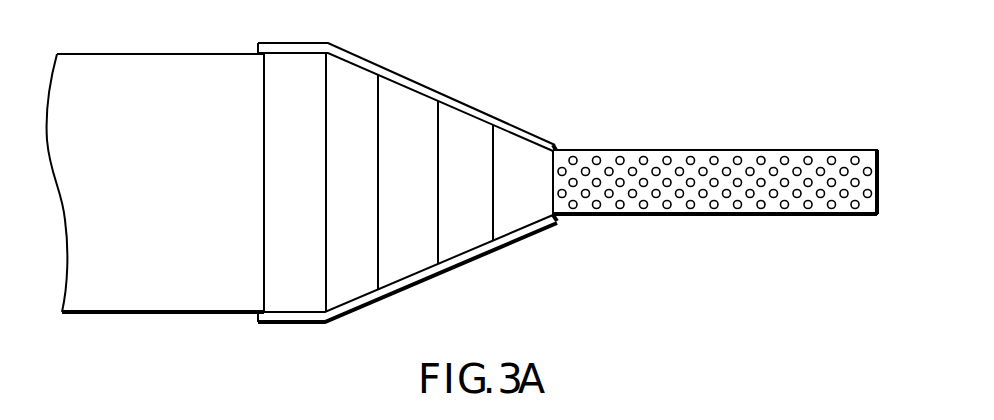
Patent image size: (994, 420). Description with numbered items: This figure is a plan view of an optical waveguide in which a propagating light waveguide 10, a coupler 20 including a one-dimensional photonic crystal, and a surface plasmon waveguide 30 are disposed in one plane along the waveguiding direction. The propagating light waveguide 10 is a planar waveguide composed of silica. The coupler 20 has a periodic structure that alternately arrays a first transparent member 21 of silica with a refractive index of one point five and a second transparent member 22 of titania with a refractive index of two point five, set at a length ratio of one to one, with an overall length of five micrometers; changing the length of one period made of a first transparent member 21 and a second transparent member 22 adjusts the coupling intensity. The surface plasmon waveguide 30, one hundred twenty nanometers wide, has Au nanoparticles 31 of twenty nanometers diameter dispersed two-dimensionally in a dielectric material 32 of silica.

The propagating light waveguide 10 is at (142, 67).
The coupler 20 is at (415, 78).
The first transparent member 21 is at (292, 300).
The second transparent member 22 is at (352, 283).
The surface plasmon waveguide 30 is at (705, 147).
The Au nanoparticles 31 is at (678, 203).
The dielectric material 32 is at (749, 197).